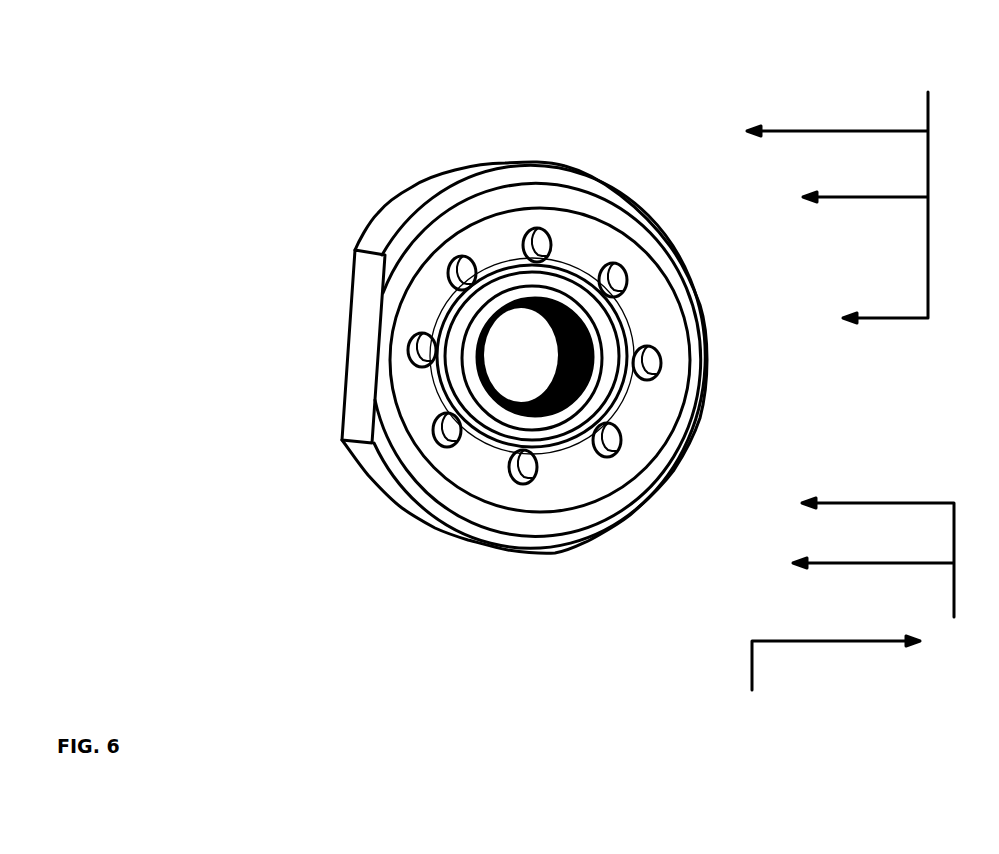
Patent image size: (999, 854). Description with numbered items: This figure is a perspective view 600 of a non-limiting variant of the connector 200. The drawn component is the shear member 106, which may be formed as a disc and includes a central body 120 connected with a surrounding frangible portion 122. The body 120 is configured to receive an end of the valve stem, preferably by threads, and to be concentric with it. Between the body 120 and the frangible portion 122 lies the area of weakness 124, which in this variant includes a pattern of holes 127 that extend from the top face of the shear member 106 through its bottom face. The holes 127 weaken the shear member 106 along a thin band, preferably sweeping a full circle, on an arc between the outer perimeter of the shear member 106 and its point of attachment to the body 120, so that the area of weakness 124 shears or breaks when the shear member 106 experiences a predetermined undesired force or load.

The flange assembly 600 is at (523, 48).
The area of weakness 124 is at (848, 191).
The holes 127 is at (540, 248).
The body 120 is at (598, 400).
The frangible portion 122 is at (577, 518).
The shear member 106 is at (862, 594).
The connector 200 is at (748, 715).